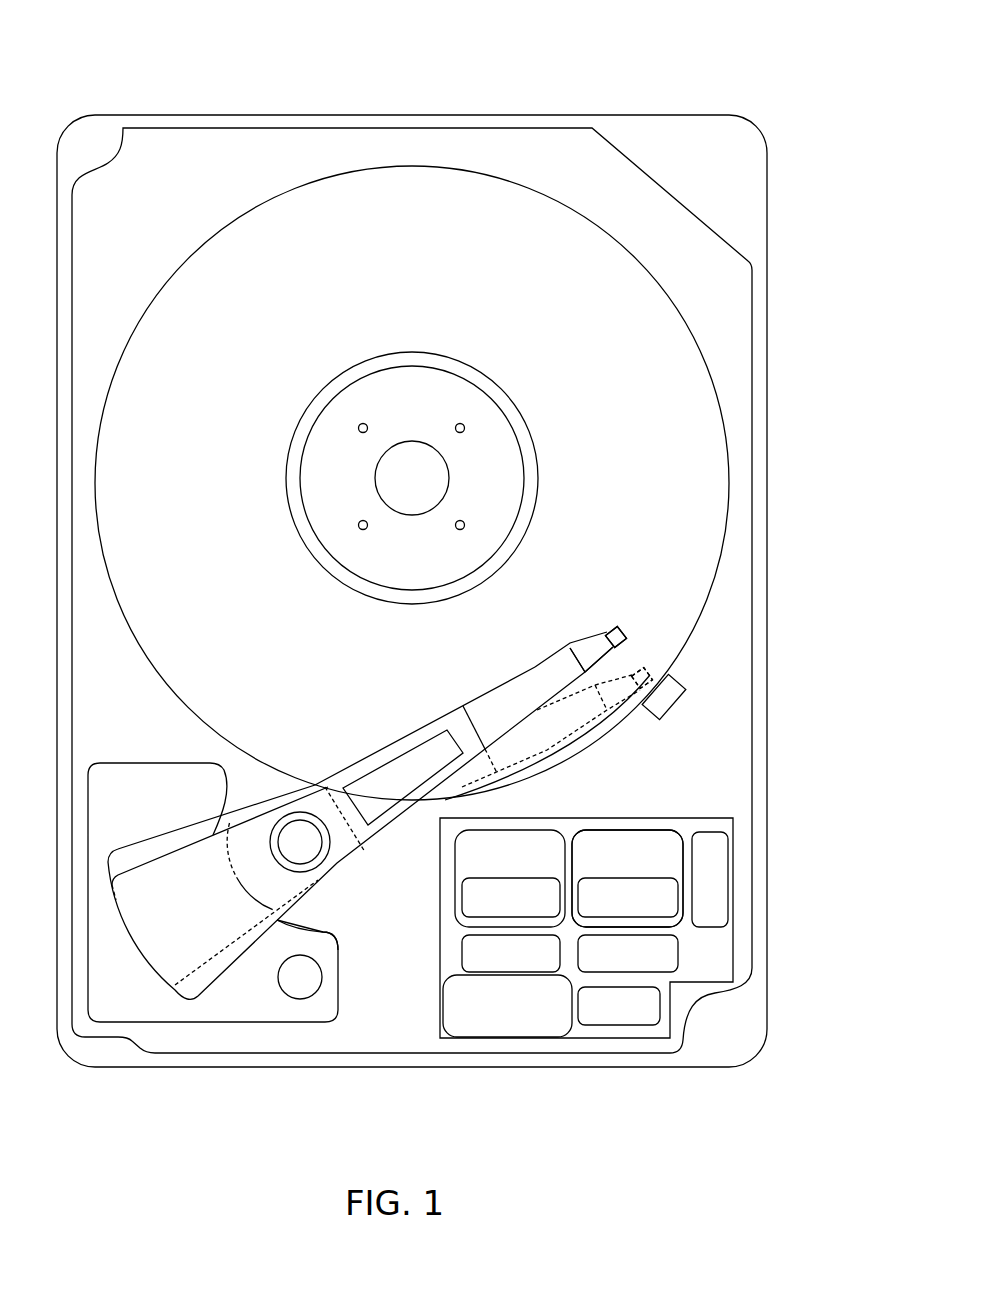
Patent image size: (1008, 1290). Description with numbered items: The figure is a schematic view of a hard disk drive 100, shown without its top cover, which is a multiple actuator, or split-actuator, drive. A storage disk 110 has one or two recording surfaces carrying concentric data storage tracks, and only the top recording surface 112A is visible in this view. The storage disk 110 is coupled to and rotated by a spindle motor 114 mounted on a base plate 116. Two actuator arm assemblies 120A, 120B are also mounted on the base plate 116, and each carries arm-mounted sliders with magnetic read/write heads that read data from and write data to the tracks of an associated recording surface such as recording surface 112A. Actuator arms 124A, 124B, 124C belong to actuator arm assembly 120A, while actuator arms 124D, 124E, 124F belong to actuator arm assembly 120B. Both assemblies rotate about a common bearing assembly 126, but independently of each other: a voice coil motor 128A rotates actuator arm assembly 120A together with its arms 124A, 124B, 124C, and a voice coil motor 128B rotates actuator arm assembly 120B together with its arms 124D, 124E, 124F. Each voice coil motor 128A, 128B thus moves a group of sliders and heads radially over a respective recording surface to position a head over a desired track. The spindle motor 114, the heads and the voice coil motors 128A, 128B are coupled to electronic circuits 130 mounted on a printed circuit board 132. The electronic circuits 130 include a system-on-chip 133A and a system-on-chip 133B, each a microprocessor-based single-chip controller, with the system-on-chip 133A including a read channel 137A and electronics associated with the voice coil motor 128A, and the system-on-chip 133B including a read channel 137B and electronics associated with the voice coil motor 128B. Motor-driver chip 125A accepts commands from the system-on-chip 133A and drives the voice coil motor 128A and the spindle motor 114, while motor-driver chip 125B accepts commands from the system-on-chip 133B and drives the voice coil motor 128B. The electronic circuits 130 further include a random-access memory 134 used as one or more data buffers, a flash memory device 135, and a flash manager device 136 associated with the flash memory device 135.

The hard disk drive 100 is at (143, 66).
The storage disk 110 is at (185, 262).
The recording surface 112A is at (205, 448).
The spindle motor 114 is at (513, 415).
The base plate 116 is at (755, 618).
The actuator arm assembly 120A is at (487, 710).
The actuator arm assembly 120B is at (487, 710).
The actuator arm 124A is at (475, 728).
The actuator arm 124B is at (475, 728).
The actuator arm 124C is at (380, 755).
The actuator arm 124D is at (541, 746).
The actuator arm 124E is at (541, 746).
The actuator arm 124F is at (442, 795).
The motor-driver chip 125A is at (511, 953).
The motor-driver chip 125B is at (628, 953).
The bearing assembly 126 is at (325, 883).
The voice coil motor 128A is at (385, 1014).
The voice coil motor 128B is at (338, 963).
The electronic circuits 130 is at (597, 811).
The printed circuit board 132 is at (665, 818).
The system-on-chip 133A is at (510, 878).
The system-on-chip 133B is at (627, 878).
The random-access memory 134 is at (730, 877).
The flash memory device 135 is at (507, 1006).
The flash manager device 136 is at (619, 1006).
The read channel 137A is at (511, 897).
The read channel 137B is at (628, 897).